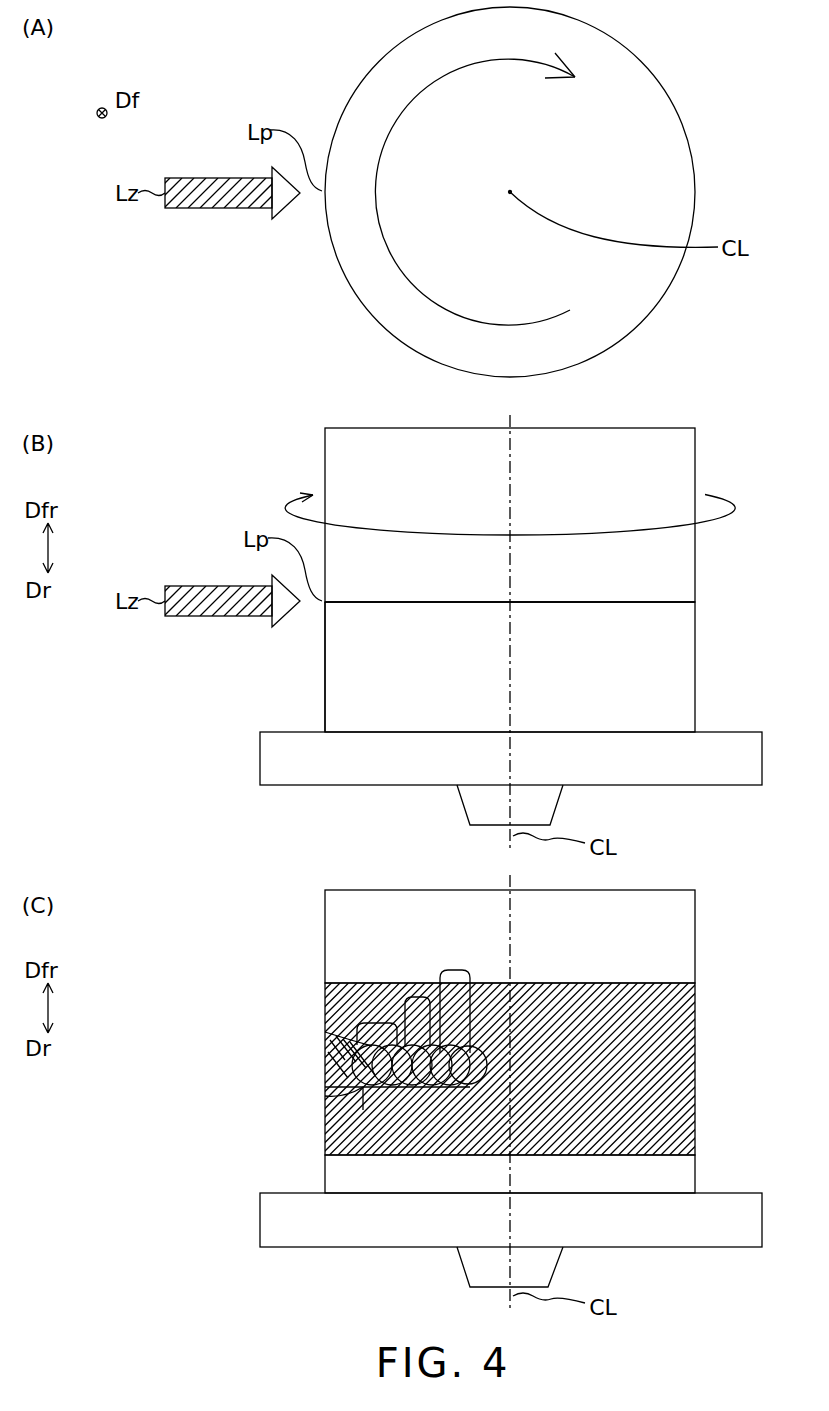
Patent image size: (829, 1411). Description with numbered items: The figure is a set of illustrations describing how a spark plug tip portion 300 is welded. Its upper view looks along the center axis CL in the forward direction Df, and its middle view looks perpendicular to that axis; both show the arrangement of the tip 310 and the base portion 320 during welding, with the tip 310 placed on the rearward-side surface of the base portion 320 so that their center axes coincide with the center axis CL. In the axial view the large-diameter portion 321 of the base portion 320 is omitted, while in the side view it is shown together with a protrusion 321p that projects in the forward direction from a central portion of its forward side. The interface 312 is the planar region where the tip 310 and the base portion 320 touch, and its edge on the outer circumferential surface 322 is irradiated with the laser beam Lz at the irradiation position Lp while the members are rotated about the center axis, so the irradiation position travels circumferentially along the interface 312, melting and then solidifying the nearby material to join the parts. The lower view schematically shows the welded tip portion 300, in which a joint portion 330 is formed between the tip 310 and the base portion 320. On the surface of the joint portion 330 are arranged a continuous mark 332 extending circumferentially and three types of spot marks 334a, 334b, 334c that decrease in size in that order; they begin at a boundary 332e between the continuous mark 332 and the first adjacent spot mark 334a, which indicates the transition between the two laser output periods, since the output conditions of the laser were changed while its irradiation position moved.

The tip portion 300 is at (195, 1247).
The tip 310 is at (650, 68).
The interface 312 is at (640, 601).
The base portion 320 is at (672, 108).
The large-diameter portion 321 is at (287, 758).
The protrusion 321p is at (483, 813).
The outer circumferential surface 322 is at (688, 143).
The joint portion 330 is at (696, 1097).
The continuous mark 332 is at (340, 1065).
The boundary 332e is at (366, 1100).
The spot mark 334a is at (364, 1023).
The spot mark 334b is at (412, 997).
The spot mark 334c is at (448, 970).